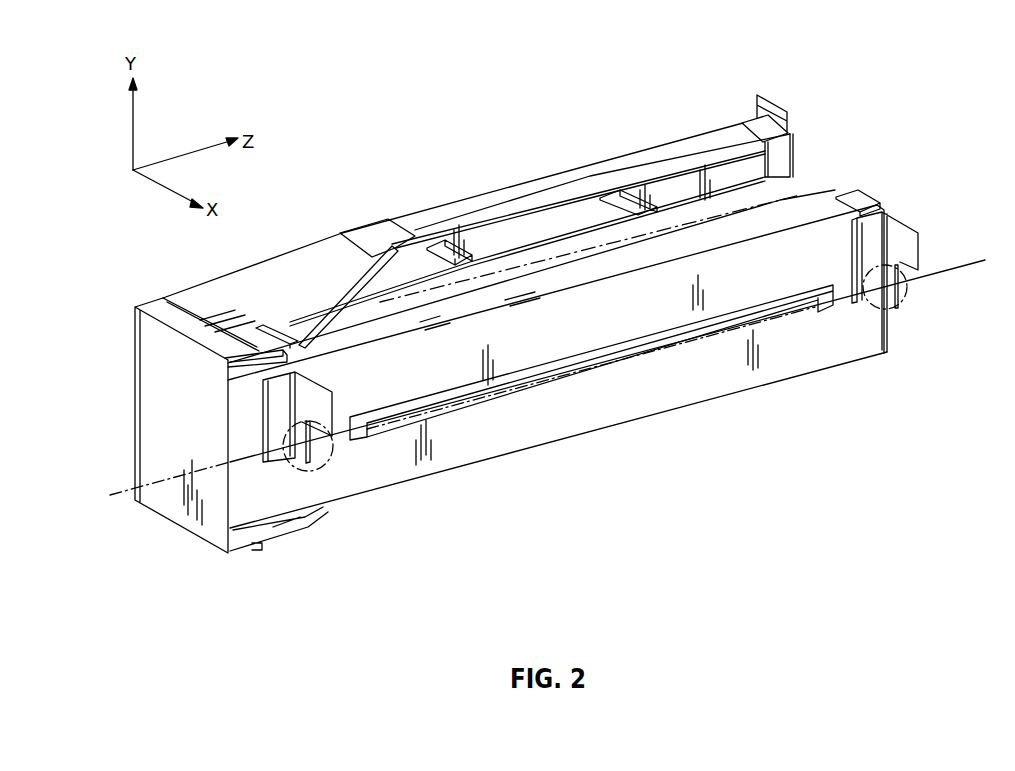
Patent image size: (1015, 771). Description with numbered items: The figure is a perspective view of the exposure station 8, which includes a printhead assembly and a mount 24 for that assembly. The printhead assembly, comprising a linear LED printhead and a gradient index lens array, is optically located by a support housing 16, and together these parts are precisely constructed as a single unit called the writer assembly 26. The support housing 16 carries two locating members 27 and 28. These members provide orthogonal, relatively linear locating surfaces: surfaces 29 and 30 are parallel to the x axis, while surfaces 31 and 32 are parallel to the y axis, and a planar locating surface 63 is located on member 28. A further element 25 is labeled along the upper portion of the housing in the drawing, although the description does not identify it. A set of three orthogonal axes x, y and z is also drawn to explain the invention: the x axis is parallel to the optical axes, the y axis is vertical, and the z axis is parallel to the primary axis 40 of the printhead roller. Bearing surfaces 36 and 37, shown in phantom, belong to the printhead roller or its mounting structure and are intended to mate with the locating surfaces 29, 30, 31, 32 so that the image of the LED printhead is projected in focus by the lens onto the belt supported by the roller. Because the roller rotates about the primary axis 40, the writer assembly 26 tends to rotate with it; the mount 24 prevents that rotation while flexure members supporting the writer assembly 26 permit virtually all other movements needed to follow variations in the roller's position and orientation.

The exposure station 8 is at (912, 146).
The support housing 16 is at (593, 417).
The mount 24 is at (535, 168).
The rear wall plate 25 is at (653, 167).
The writer assembly 26 is at (790, 218).
The locating member 27 is at (305, 400).
The locating member 28 is at (910, 233).
The locating surface 29 is at (315, 430).
The locating surface 30 is at (900, 268).
The locating surface 31 is at (305, 467).
The locating surface 32 is at (898, 305).
The bearing surface 36 is at (308, 457).
The bearing surface 37 is at (900, 270).
The primary axis 40 is at (122, 490).
The planar locating surface 63 is at (892, 235).